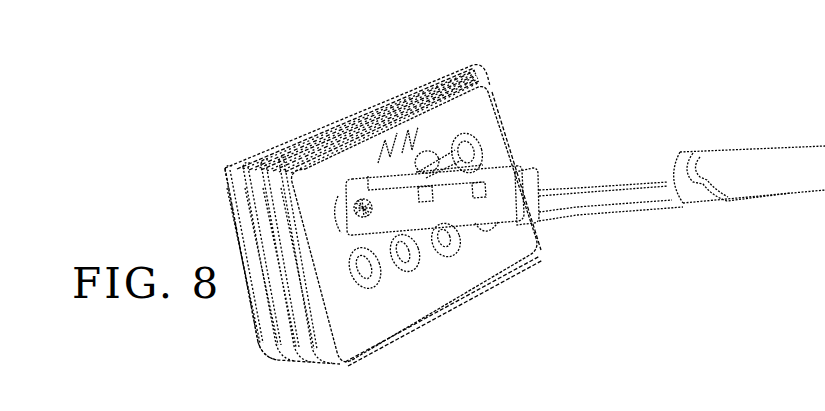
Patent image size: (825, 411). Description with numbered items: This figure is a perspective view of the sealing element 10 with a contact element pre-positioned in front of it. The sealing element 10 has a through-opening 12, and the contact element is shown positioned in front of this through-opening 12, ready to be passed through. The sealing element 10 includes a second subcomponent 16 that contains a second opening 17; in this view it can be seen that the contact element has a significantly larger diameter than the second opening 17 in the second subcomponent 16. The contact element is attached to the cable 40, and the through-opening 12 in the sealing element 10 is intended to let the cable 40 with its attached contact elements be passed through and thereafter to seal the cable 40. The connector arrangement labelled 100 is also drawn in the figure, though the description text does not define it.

The sealing element 10 is at (307, 133).
The through-opening 12 is at (362, 306).
The second subcomponent 16 is at (464, 114).
The second opening 17 is at (412, 265).
The connector / cable 100 is at (626, 195).
The cable 40 is at (752, 163).